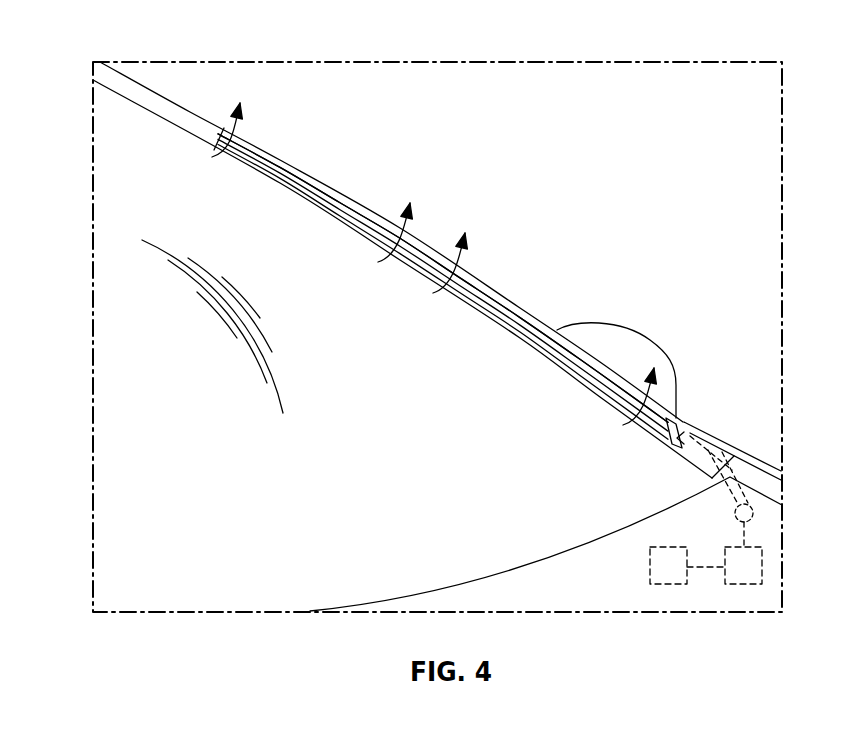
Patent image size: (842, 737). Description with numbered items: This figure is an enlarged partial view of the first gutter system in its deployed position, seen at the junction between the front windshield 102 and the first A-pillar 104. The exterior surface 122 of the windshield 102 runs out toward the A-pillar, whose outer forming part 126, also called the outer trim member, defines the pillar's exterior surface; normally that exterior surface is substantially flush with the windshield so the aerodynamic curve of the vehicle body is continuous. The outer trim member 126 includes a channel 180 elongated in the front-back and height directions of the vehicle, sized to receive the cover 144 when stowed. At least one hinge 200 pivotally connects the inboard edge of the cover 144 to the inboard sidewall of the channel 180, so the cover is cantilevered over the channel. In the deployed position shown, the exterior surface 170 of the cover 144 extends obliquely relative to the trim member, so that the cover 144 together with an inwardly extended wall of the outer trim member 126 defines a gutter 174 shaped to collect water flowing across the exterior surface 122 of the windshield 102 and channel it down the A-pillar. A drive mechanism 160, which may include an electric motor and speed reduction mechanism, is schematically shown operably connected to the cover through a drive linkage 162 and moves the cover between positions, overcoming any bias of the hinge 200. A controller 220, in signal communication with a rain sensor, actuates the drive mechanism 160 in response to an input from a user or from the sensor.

The front windshield 102 is at (116, 411).
The exterior surface of the windshield 122 is at (116, 307).
The outer forming part 126 is at (157, 100).
The first A-pillar 104 is at (200, 116).
The gutter 174 is at (325, 188).
The channel 180 is at (372, 218).
The exterior surface of the cover 170 is at (493, 297).
The cover 144 is at (545, 326).
The hinge 200 is at (668, 430).
The drive linkage 162 is at (697, 468).
The controller 220 is at (665, 584).
The drive mechanism 160 is at (742, 584).